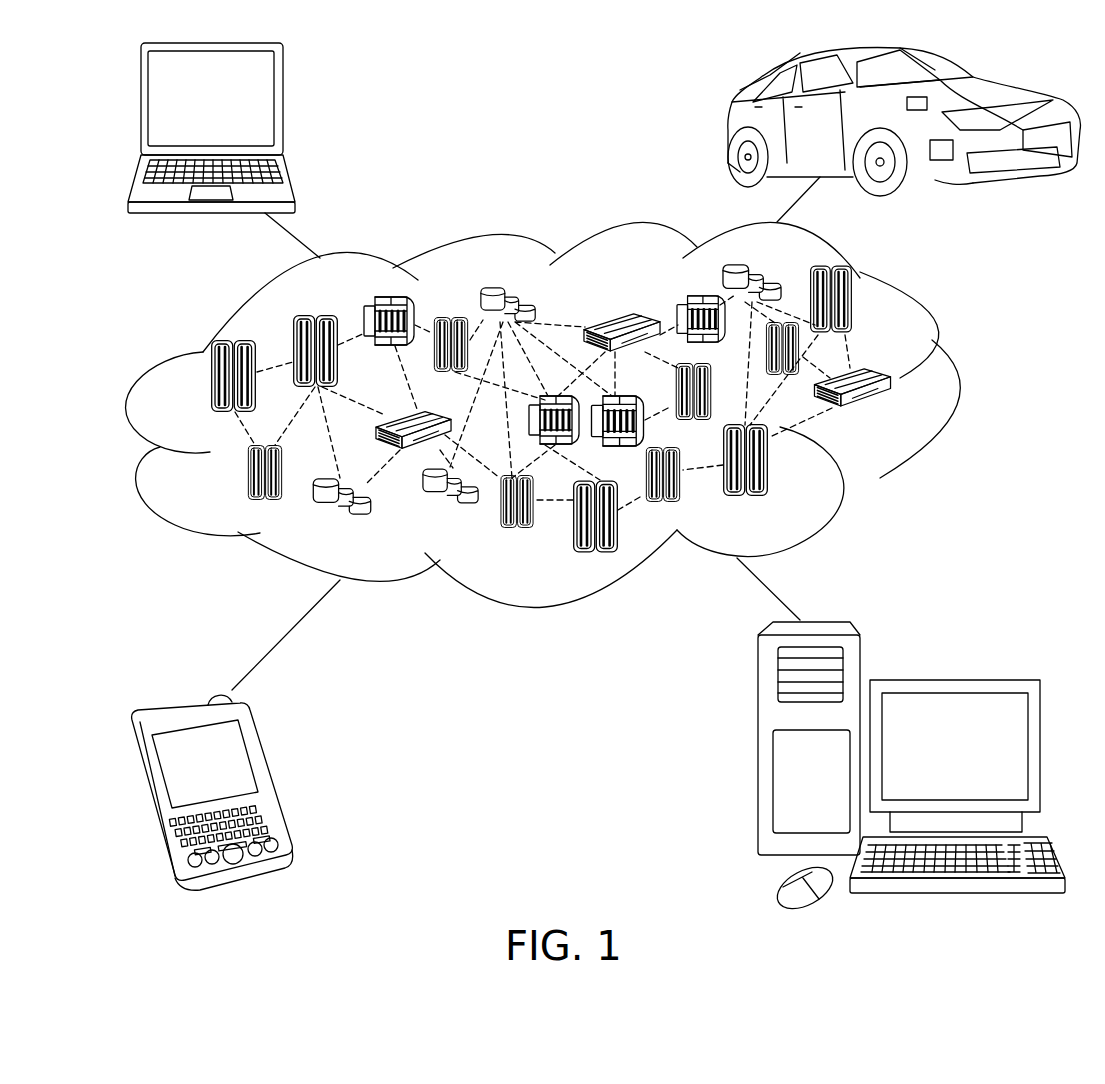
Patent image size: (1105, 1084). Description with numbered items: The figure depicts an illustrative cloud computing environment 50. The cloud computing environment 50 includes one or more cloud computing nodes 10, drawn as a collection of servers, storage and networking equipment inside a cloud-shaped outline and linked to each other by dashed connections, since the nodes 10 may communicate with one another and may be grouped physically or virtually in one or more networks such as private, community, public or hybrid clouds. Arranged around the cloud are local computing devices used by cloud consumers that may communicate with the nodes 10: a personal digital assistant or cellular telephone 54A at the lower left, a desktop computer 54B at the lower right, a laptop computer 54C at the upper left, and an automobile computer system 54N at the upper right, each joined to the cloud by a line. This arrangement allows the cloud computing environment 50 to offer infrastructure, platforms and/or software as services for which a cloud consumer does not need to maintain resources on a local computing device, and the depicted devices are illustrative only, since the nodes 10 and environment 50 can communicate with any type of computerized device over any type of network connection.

The cloud computing nodes 10 is at (905, 420).
The cloud computing environment 50 is at (955, 385).
The personal digital assistant or cellular telephone 54A is at (272, 778).
The desktop computer 54B is at (952, 680).
The laptop computer 54C is at (283, 108).
The automobile computer system 54N is at (727, 124).